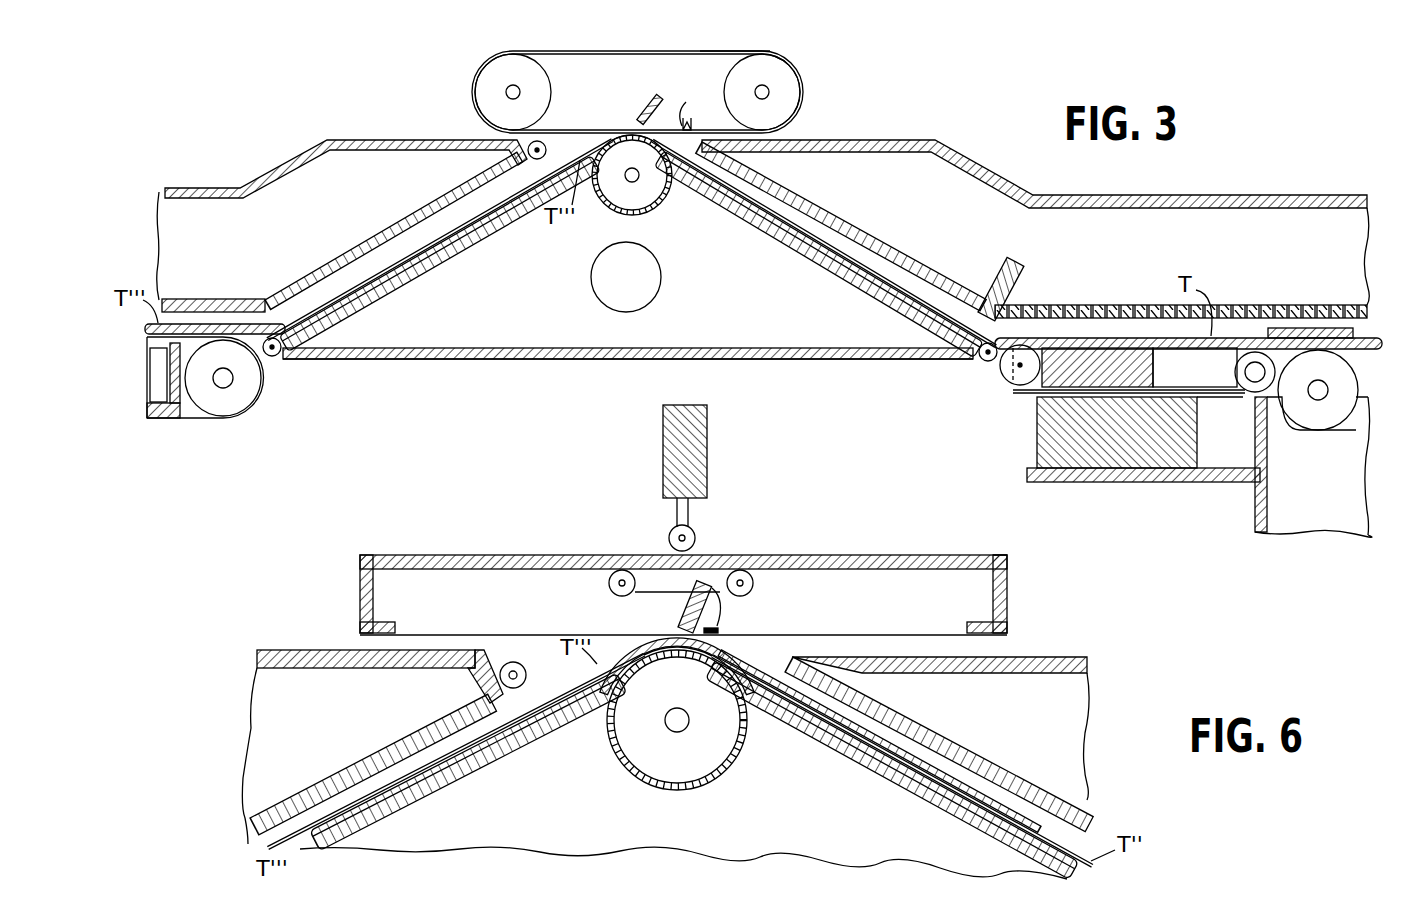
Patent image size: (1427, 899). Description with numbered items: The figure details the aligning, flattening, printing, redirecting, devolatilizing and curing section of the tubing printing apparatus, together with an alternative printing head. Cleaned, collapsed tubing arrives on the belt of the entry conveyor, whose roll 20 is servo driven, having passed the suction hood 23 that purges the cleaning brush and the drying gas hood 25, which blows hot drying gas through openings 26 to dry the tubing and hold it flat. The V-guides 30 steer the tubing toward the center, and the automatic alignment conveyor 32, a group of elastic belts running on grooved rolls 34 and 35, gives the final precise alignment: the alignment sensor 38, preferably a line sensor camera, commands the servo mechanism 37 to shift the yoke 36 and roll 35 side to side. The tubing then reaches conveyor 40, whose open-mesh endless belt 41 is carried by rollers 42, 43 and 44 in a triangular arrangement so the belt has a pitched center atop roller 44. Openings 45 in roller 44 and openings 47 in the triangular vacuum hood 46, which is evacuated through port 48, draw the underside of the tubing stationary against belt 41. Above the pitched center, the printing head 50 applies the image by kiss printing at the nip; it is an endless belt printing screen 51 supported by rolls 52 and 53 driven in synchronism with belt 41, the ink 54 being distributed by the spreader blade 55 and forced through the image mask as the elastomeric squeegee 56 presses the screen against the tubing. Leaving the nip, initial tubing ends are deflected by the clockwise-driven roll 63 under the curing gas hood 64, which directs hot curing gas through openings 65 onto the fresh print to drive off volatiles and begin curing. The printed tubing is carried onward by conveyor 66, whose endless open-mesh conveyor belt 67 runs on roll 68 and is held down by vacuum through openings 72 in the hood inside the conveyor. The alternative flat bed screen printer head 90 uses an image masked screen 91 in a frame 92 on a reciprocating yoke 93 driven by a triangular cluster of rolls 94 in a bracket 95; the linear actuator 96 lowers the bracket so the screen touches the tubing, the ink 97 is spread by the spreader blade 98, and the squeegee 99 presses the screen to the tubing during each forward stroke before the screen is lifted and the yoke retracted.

In FIG. 3, the roll 20 is at (1358, 392).
In FIG. 3, the suction hood 23 is at (1240, 396).
In FIG. 6, the drying gas hood 25 is at (940, 728).
In FIG. 6, the openings 26 is at (1085, 790).
In FIG. 3, the V-guides 30 is at (1352, 332).
In FIG. 3, the automatic alignment conveyor 32 is at (1226, 394).
In FIG. 3, the roll 34 is at (1238, 372).
In FIG. 3, the roll 35 is at (1010, 376).
In FIG. 3, the yoke 36 is at (1036, 396).
In FIG. 3, the servo mechanism 37 is at (1060, 437).
In FIG. 3, the alignment sensor 38 is at (1015, 261).
In FIG. 3, the conveyor 40 is at (651, 359).
In FIG. 3, the open-mesh endless belt 41 is at (786, 359).
In FIG. 3, the roller 42 is at (278, 357).
In FIG. 3, the roller 43 is at (981, 361).
In FIG. 3, the roller 44 is at (605, 150).
In FIG. 6, the roller 44 is at (677, 714).
In FIG. 3, the openings 45 is at (616, 180).
In FIG. 6, the openings 45 is at (682, 792).
In FIG. 3, the triangular vacuum hood 46 is at (876, 360).
In FIG. 6, the triangular vacuum hood 46 is at (899, 766).
In FIG. 3, the openings 47 is at (946, 326).
In FIG. 6, the openings 47 is at (478, 780).
In FIG. 3, the port 48 is at (655, 306).
In FIG. 3, the printing head 50 is at (667, 50).
In FIG. 3, the endless belt printing screen 51 is at (738, 52).
In FIG. 3, the roll 52 is at (790, 84).
In FIG. 3, the roll 53 is at (513, 74).
In FIG. 3, the ink 54 is at (692, 128).
In FIG. 3, the spreader blade 55 is at (688, 102).
In FIG. 3, the elastomeric squeegee 56 is at (644, 108).
In FIG. 3, the roll 63 is at (548, 142).
In FIG. 6, the roll 63 is at (515, 661).
In FIG. 3, the curing gas hood 64 is at (376, 164).
In FIG. 6, the curing gas hood 64 is at (372, 747).
In FIG. 3, the openings 65 is at (511, 168).
In FIG. 6, the openings 65 is at (411, 740).
In FIG. 3, the conveyor 66 is at (198, 426).
In FIG. 3, the endless open-mesh conveyor belt 67 is at (237, 424).
In FIG. 3, the roll 68 is at (245, 385).
In FIG. 3, the openings 72 is at (150, 374).
In FIG. 6, the flat bed screen printer head 90 is at (881, 556).
In FIG. 6, the image masked screen 91 is at (893, 634).
In FIG. 6, the frame 92 is at (968, 630).
In FIG. 6, the reciprocating yoke 93 is at (1004, 555).
In FIG. 6, the rolls 94 is at (740, 574).
In FIG. 6, the bracket 95 is at (670, 546).
In FIG. 6, the linear actuator 96 is at (707, 457).
In FIG. 6, the ink 97 is at (722, 632).
In FIG. 6, the spreader blade 98 is at (722, 608).
In FIG. 6, the squeegee 99 is at (683, 610).